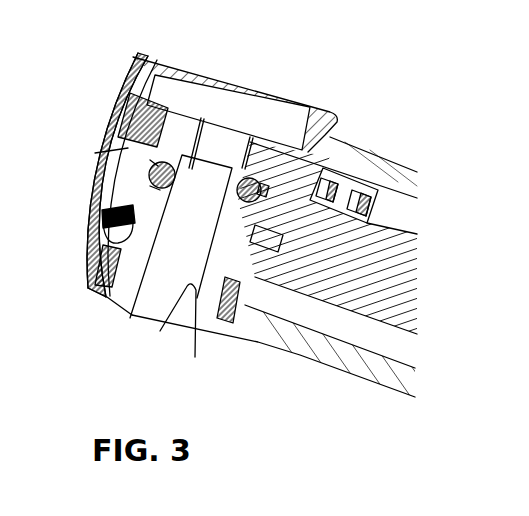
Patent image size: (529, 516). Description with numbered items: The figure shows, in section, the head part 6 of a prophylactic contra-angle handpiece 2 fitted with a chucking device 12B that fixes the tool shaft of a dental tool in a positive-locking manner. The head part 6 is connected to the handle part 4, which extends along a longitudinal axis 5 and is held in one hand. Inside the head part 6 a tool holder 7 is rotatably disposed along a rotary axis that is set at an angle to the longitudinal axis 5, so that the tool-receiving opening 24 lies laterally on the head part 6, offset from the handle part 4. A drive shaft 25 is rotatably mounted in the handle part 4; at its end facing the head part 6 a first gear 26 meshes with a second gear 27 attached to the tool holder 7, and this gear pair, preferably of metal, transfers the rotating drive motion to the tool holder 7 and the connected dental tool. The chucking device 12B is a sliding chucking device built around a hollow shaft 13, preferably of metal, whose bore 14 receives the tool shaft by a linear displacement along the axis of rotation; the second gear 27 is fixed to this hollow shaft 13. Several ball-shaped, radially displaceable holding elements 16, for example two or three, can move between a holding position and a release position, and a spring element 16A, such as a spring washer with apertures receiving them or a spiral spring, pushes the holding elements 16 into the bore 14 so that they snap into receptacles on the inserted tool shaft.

The prophylactic contra-angle handpiece 2 is at (326, 88).
The handle part 4 is at (394, 398).
The longitudinal axis 5 is at (406, 285).
The head part 6 is at (103, 83).
The tool holder 7 is at (130, 170).
The chucking device 12B is at (145, 160).
The hollow shaft 13 is at (195, 357).
The bore 14 is at (160, 331).
The holding elements 16 is at (163, 163).
The spring element 16A is at (148, 175).
The tool-receiving opening 24 is at (133, 318).
The drive shaft 25 is at (421, 307).
The first gear 26 is at (257, 283).
The second gear 27 is at (136, 198).